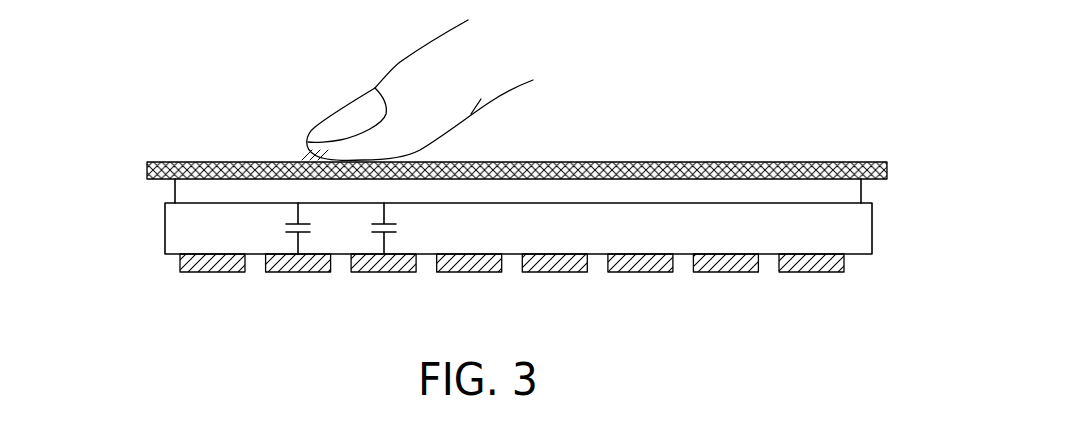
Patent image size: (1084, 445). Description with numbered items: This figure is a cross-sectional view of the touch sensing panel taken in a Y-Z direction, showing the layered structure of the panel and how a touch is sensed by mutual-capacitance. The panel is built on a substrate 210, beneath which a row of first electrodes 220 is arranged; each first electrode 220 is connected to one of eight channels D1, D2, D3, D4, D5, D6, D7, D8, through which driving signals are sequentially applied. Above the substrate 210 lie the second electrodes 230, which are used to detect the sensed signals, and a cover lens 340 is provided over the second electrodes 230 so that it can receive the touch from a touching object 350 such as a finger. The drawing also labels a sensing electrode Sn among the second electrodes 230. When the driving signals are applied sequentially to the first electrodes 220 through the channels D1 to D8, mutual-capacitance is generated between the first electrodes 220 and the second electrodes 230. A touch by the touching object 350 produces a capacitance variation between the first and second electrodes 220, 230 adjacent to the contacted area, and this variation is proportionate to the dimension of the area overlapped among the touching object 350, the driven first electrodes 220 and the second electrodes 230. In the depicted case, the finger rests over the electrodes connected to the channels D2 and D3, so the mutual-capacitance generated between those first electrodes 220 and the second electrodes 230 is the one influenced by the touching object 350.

The touching object 350 is at (428, 72).
The cover lens 340 is at (655, 162).
The second electrodes 230 is at (182, 192).
The sensing electrode Sn is at (861, 189).
The substrate 210 is at (172, 227).
The first electrodes 220 is at (458, 286).
The channel D1 is at (212, 272).
The channel D2 is at (298, 272).
The channel D3 is at (384, 272).
The channel D4 is at (469, 272).
The channel D5 is at (555, 272).
The channel D6 is at (640, 272).
The channel D7 is at (726, 272).
The channel D8 is at (812, 272).